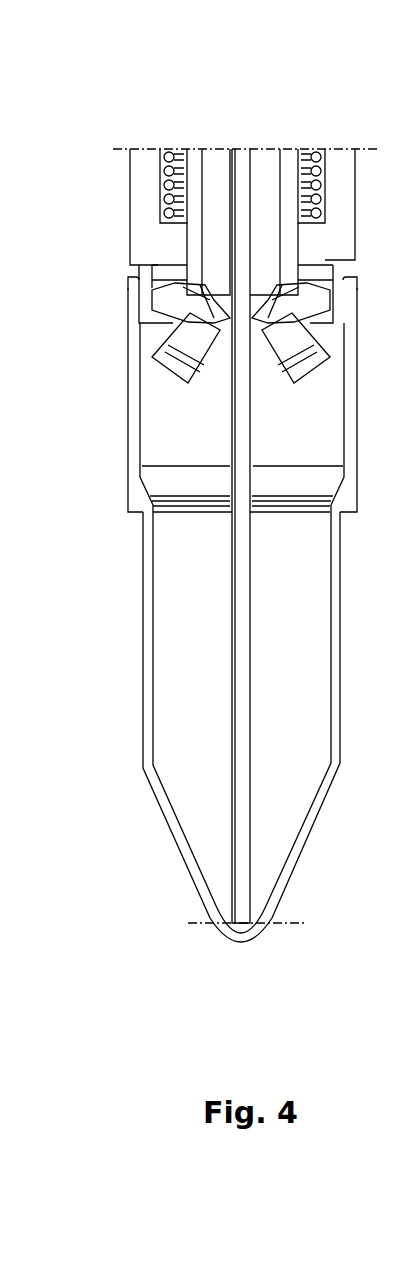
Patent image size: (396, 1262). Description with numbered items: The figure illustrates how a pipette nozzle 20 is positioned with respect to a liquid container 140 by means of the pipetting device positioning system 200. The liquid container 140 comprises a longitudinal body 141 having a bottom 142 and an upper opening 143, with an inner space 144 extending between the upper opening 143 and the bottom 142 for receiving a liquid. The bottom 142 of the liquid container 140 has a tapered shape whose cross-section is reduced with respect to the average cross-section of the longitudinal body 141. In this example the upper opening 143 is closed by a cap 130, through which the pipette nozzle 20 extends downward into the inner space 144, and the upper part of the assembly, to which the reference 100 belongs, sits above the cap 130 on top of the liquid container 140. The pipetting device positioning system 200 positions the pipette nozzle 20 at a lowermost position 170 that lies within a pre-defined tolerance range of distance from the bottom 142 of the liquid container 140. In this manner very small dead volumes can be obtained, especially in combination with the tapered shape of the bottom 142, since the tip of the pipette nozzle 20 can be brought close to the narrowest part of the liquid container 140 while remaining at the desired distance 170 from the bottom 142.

The pipetting device positioning system 200 is at (160, 110).
The handle body 100 is at (128, 243).
The cap 130 is at (128, 267).
The upper opening 143 is at (127, 292).
The liquid container 140 is at (128, 440).
The inner space 144 is at (173, 603).
The longitudinal body 141 is at (143, 690).
The bottom 142 is at (240, 940).
The lowermost position 170 is at (253, 925).
The pipette nozzle 20 is at (232, 823).